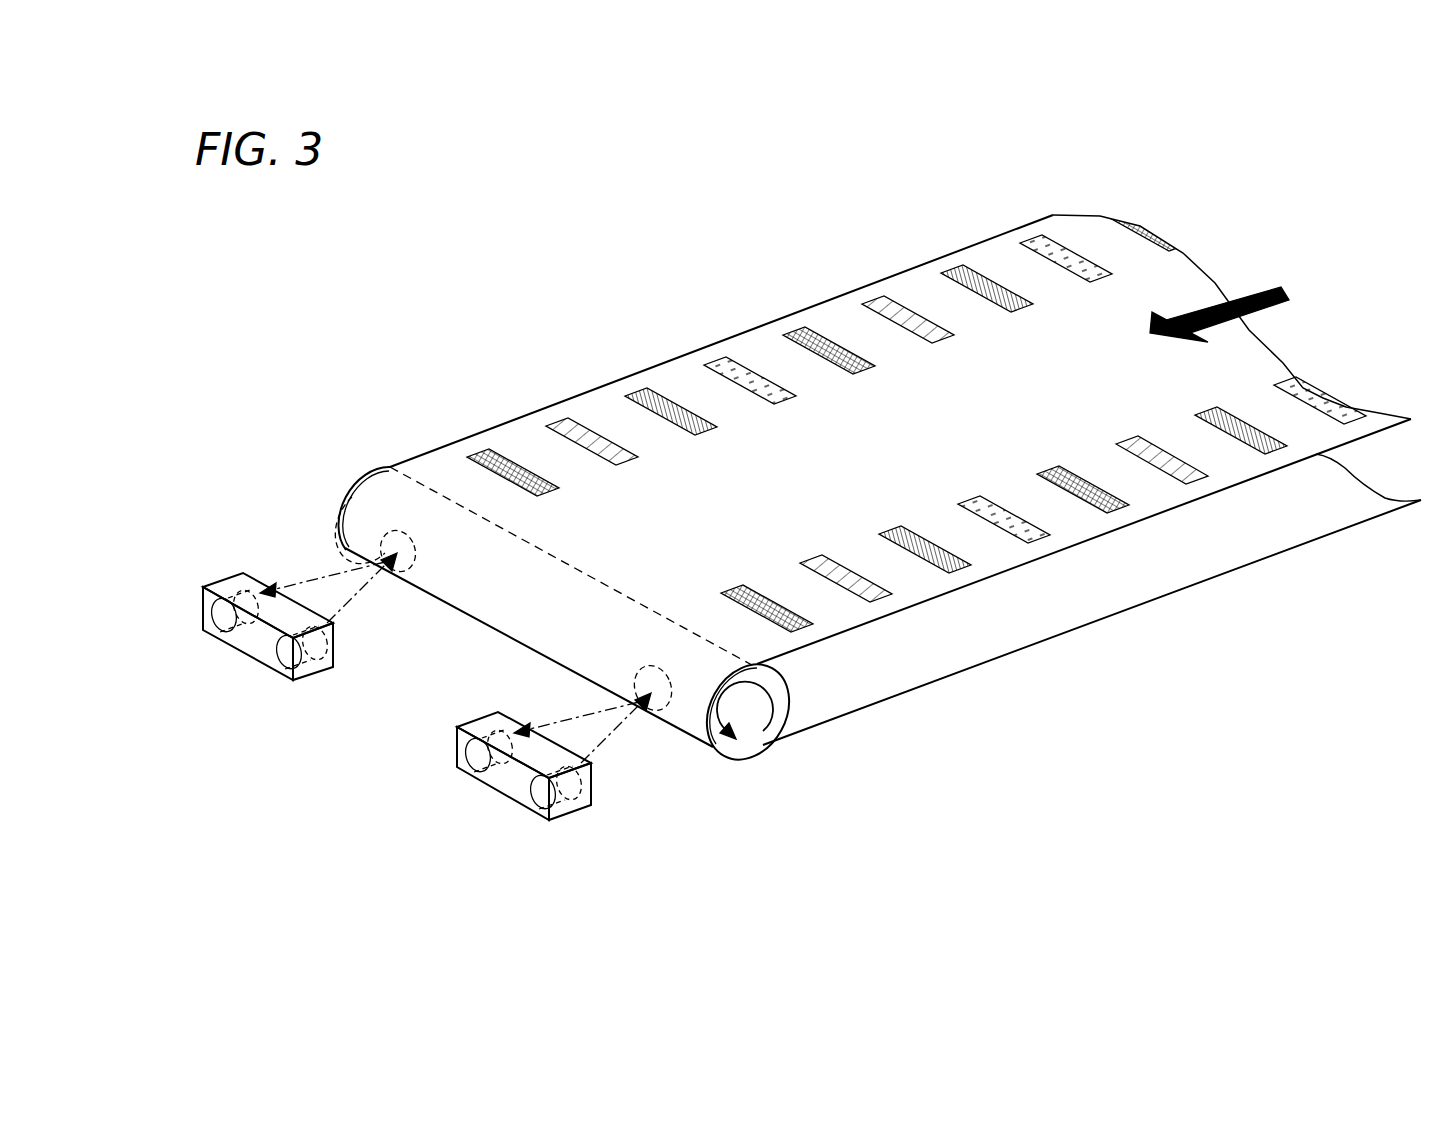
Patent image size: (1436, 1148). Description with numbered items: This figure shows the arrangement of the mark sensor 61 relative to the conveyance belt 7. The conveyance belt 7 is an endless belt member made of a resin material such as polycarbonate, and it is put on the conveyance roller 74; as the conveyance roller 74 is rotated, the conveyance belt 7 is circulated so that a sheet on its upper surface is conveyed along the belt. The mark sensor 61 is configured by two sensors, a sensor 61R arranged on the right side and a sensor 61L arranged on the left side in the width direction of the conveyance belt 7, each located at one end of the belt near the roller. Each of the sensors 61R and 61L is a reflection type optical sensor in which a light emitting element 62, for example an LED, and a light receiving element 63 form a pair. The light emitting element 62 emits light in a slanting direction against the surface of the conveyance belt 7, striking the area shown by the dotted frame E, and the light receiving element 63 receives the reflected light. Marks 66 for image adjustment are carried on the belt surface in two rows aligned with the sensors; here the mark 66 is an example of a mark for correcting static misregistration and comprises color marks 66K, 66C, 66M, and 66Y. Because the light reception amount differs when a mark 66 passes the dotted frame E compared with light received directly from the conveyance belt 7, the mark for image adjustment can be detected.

The conveyance belt 7 is at (637, 378).
The conveyance roller 74 is at (743, 743).
The mark for image adjustment 66 is at (1133, 653).
The black mark for image adjustment 66K is at (490, 457).
The cyan mark for image adjustment 66C is at (887, 591).
The magenta mark for image adjustment 66M is at (953, 563).
The yellow mark for image adjustment 66Y is at (1033, 528).
The mark sensor 61 is at (370, 795).
The sensor 61R is at (318, 672).
The sensor 61L is at (458, 738).
The light emitting element 62 is at (272, 668).
The light receiving element 63 is at (212, 638).
The dotted frame E is at (333, 507).